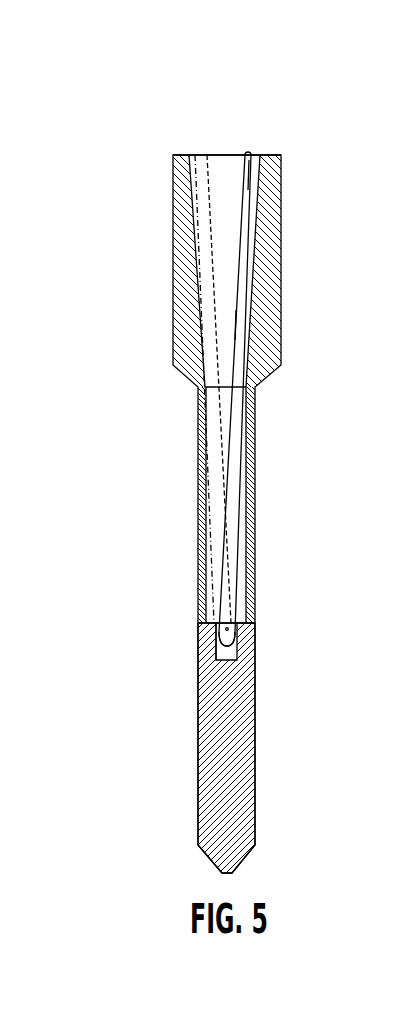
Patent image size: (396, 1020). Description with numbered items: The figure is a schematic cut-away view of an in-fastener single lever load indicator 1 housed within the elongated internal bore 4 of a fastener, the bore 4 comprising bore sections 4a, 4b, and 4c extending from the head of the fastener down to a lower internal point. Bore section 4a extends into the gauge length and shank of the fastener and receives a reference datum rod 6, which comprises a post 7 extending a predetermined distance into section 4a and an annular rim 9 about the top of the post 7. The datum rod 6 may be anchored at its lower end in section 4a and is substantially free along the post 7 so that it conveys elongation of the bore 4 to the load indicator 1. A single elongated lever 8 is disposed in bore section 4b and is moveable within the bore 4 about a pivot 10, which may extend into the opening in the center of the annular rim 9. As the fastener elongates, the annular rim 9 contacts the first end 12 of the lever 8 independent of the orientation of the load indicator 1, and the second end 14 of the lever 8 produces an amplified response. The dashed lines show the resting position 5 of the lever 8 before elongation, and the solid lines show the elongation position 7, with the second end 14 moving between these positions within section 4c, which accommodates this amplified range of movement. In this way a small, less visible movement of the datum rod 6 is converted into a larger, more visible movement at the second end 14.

The in-fastener single lever load indicator 1 is at (136, 102).
The elongated internal bore 4 is at (185, 368).
The bore section 4a is at (205, 773).
The bore section 4b is at (203, 500).
The bore section 4c is at (181, 279).
The resting position 5 is at (197, 152).
The reference datum rod 6 is at (247, 695).
The elongation position 7 is at (250, 150).
The single elongated lever 8 is at (242, 327).
The annular rim 9 is at (199, 639).
The pivot 10 is at (238, 634).
The first end 12 is at (240, 620).
The second end 14 is at (252, 164).